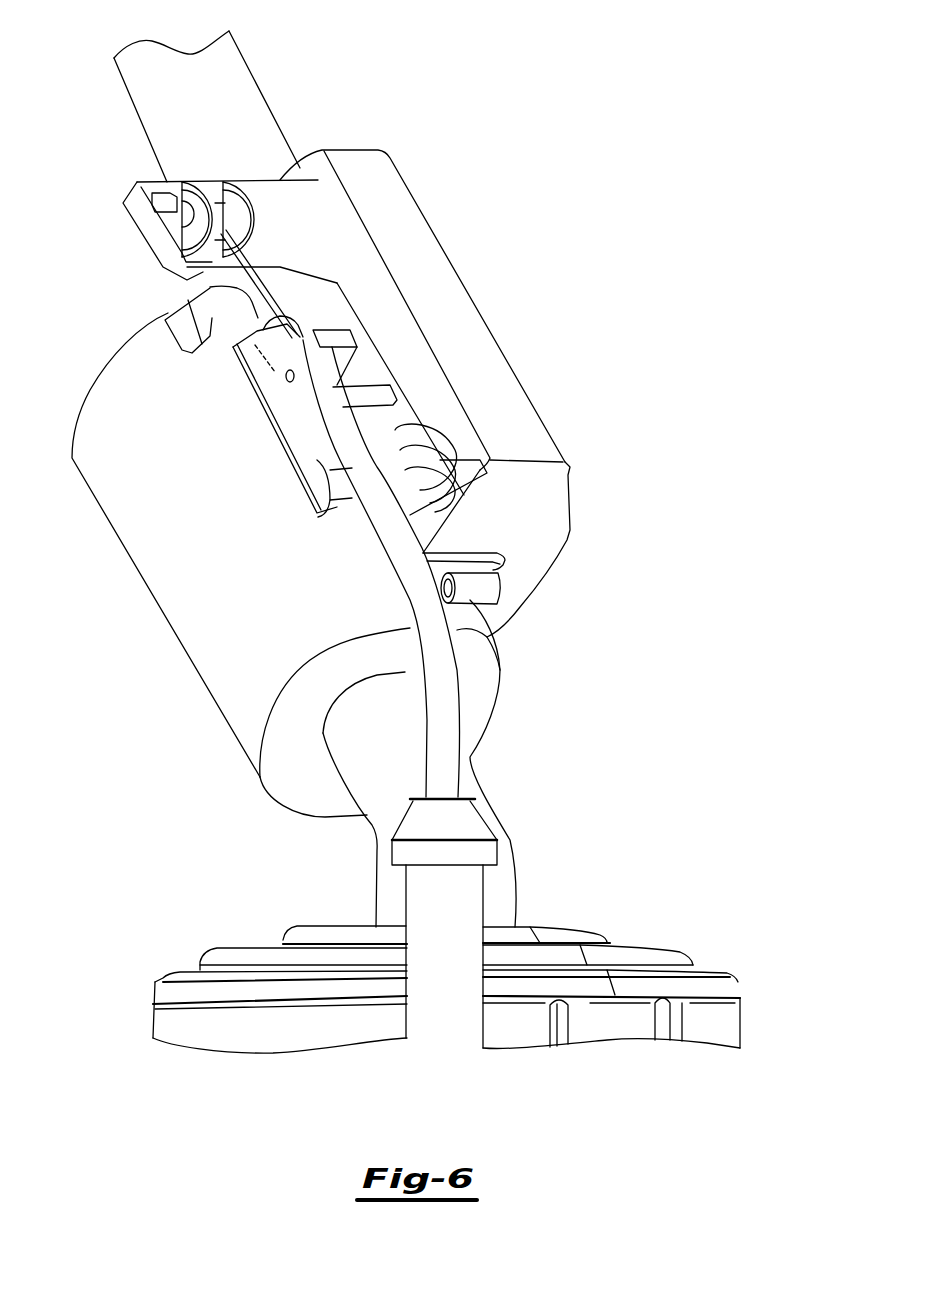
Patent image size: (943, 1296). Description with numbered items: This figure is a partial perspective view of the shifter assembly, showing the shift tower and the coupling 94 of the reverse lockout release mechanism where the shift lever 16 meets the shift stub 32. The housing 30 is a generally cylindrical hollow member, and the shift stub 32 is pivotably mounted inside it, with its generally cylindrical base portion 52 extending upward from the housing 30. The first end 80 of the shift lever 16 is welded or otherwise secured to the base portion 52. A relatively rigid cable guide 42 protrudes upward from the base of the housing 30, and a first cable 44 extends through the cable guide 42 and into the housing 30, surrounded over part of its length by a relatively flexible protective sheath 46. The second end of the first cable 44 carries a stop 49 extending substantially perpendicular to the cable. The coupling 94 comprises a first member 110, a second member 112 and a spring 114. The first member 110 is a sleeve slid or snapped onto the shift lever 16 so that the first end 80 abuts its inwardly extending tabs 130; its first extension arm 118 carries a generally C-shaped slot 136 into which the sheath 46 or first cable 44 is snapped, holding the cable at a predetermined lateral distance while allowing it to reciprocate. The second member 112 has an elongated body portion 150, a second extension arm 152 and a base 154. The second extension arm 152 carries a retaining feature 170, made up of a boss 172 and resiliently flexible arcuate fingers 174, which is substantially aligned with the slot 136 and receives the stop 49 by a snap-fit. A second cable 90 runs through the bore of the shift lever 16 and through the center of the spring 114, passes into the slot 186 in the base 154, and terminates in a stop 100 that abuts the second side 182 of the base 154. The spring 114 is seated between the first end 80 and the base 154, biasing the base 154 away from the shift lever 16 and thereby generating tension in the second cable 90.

The shift lever 16 is at (230, 48).
The housing 30 is at (183, 1018).
The shift stub 32 is at (380, 815).
The cable guide 42 is at (470, 897).
The first cable 44 is at (248, 288).
The protective sheath 46 is at (450, 770).
The stop 49 is at (190, 221).
The base portion 52 is at (203, 648).
The first end 80 is at (417, 430).
The second cable 90 is at (358, 502).
The coupling 94 is at (497, 227).
The stop 100 is at (490, 590).
The first member 110 is at (217, 352).
The second member 112 is at (457, 270).
The spring 114 is at (420, 430).
The first extension arm 118 is at (290, 484).
The inwardly extending tabs 130 is at (328, 503).
The slot 136 is at (293, 380).
The elongated body portion 150 is at (433, 252).
The second extension arm 152 is at (142, 235).
The base 154 is at (545, 583).
The retaining feature 170 is at (189, 178).
The boss 172 is at (180, 212).
The arcuate fingers 174 is at (248, 181).
The second side 182 is at (495, 630).
The slot 186 is at (482, 550).